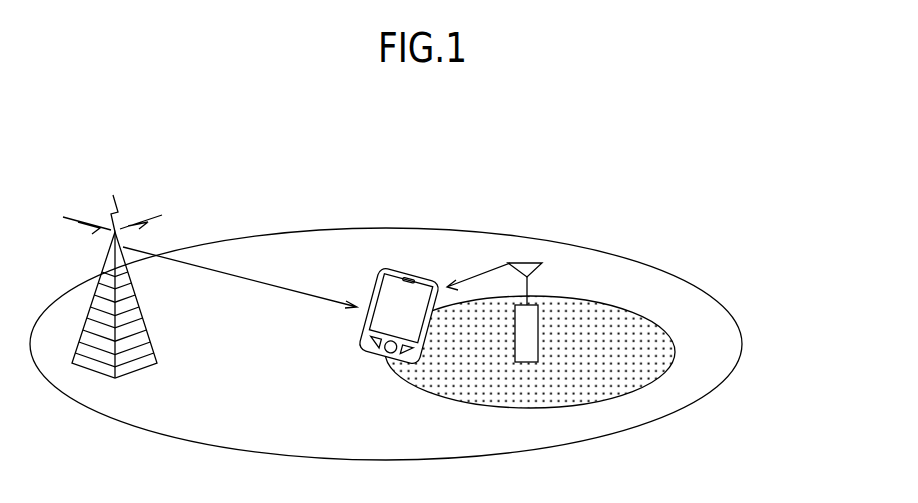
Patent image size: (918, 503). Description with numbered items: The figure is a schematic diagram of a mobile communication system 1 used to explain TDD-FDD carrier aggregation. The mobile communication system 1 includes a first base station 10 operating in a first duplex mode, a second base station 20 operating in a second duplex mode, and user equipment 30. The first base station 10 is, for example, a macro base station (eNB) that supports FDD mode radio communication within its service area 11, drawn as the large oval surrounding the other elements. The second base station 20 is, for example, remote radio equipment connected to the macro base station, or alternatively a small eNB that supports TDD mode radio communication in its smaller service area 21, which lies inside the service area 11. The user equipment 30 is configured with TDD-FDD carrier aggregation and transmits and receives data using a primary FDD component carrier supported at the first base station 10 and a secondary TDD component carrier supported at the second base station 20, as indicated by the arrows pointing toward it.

The mobile communication system 1 is at (587, 156).
The first base station 10 is at (112, 272).
The service area 11 is at (653, 267).
The second base station 20 is at (538, 320).
The service area 21 is at (675, 346).
The user equipment 30 is at (358, 328).